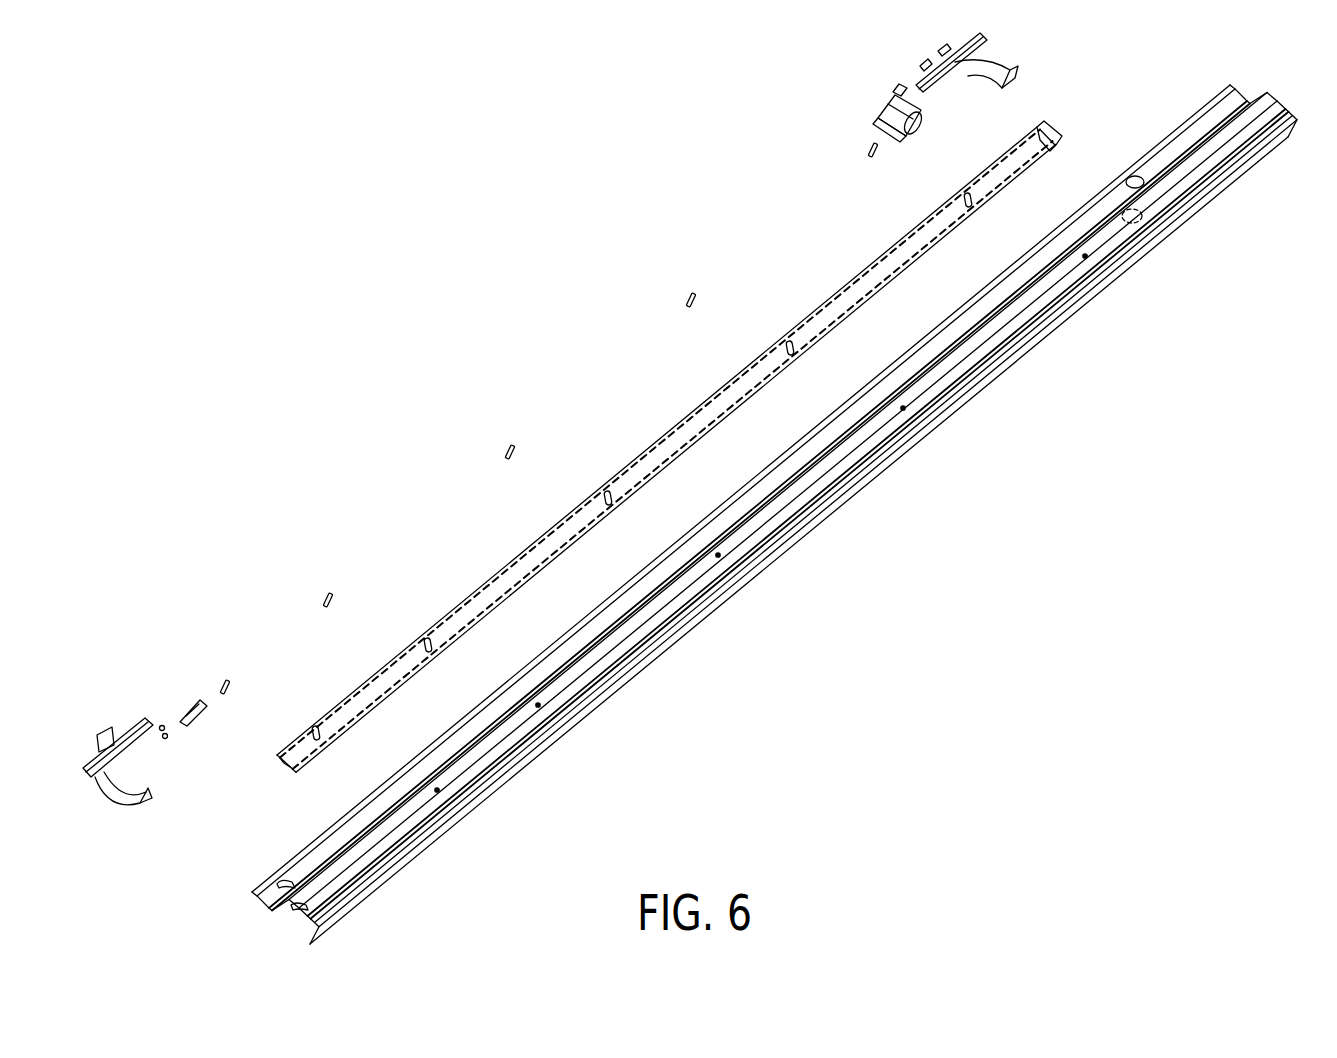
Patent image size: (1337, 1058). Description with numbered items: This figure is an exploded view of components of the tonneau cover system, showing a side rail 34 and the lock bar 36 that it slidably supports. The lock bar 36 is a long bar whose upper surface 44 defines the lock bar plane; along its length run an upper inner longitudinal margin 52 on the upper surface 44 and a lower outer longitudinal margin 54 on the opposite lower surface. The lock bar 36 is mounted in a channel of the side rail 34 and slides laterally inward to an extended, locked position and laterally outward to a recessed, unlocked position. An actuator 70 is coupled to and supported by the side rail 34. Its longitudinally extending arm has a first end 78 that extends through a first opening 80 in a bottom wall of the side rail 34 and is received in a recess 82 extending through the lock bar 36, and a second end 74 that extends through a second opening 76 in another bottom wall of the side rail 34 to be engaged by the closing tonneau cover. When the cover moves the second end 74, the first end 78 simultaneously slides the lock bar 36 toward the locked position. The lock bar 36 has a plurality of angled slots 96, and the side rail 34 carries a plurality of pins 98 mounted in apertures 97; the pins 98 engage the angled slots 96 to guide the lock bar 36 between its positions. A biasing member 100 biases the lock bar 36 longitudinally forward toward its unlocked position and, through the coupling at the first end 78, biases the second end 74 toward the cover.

The side rail 34 is at (1120, 232).
The lock bar 36 is at (696, 429).
The upper surface 44 is at (525, 562).
The upper inner longitudinal margin 52 is at (372, 672).
The lower outer longitudinal margin 54 is at (403, 688).
The actuator 70 is at (931, 87).
The second end 74 is at (899, 86).
The second opening 76 is at (1127, 178).
The first end 78 is at (921, 110).
The first opening 80 is at (1150, 212).
The recess 82 is at (1050, 132).
The angled slots 96 is at (316, 726).
The apertures 97 is at (440, 792).
The pins 98 is at (223, 681).
The biasing member 100 is at (201, 712).